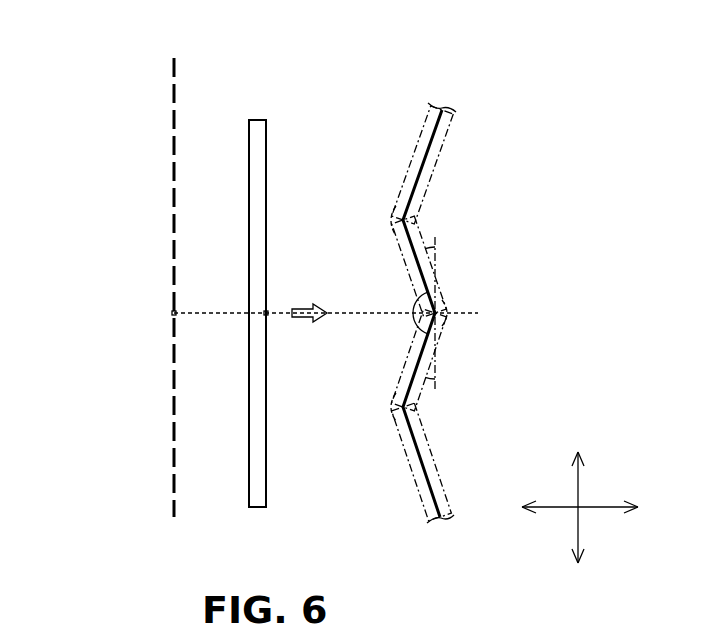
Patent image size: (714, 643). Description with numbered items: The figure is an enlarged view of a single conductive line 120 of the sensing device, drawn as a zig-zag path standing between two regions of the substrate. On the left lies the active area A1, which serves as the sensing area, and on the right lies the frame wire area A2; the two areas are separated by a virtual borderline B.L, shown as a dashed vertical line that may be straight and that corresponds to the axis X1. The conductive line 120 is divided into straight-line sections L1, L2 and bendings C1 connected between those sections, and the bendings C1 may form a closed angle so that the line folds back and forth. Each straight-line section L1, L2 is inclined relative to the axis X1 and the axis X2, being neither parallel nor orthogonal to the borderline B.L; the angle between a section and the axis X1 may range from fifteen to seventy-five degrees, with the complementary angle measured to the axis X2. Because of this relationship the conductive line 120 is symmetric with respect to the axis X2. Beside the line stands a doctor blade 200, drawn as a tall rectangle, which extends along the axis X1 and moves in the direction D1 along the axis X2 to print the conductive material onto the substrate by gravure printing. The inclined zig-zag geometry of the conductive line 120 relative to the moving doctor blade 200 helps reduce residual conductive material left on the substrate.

The conductive line 120 is at (482, 165).
The doctor blade 200 is at (258, 507).
The active area A1 is at (66, 94).
The frame wire area A2 is at (403, 93).
The virtual borderline B.L is at (175, 271).
The printing direction D1 is at (297, 309).
The straight-line section L1 is at (413, 152).
The straight-line section L2 is at (400, 258).
The bending C1 is at (390, 218).
The axis X1 is at (582, 491).
The axis X2 is at (598, 508).